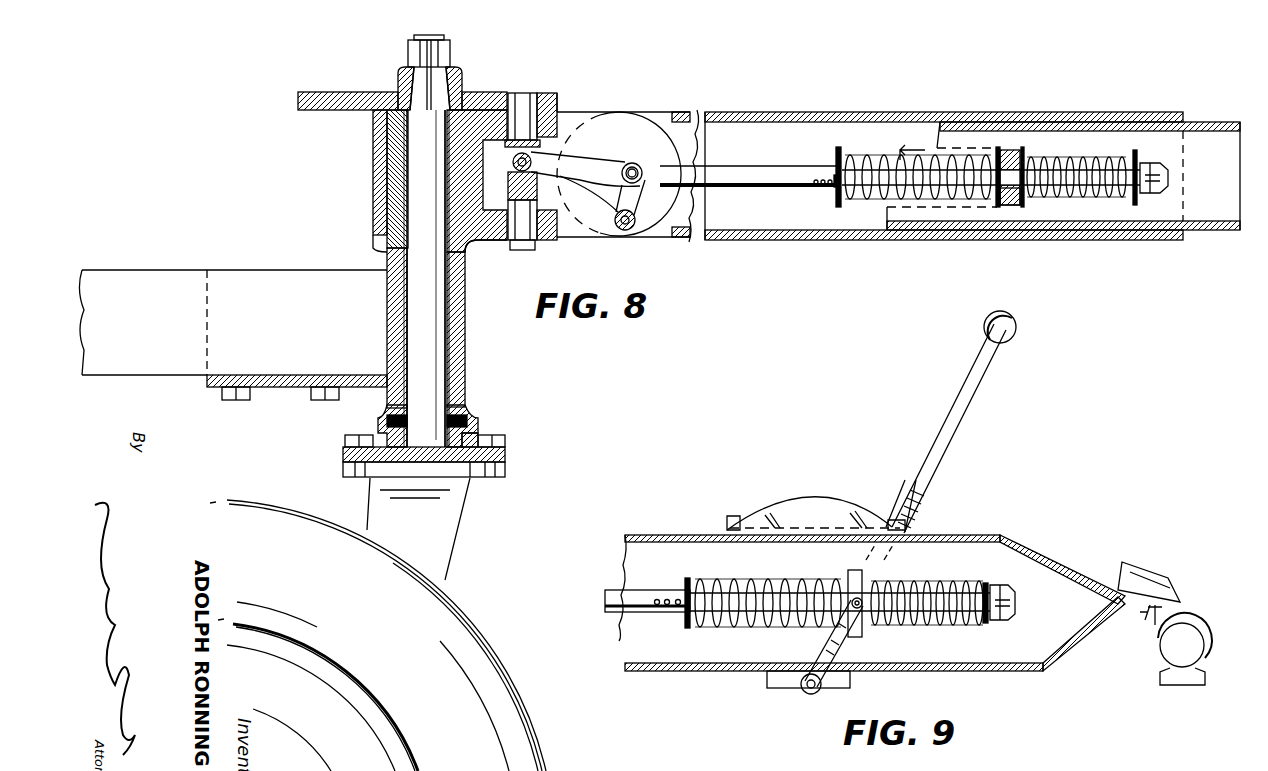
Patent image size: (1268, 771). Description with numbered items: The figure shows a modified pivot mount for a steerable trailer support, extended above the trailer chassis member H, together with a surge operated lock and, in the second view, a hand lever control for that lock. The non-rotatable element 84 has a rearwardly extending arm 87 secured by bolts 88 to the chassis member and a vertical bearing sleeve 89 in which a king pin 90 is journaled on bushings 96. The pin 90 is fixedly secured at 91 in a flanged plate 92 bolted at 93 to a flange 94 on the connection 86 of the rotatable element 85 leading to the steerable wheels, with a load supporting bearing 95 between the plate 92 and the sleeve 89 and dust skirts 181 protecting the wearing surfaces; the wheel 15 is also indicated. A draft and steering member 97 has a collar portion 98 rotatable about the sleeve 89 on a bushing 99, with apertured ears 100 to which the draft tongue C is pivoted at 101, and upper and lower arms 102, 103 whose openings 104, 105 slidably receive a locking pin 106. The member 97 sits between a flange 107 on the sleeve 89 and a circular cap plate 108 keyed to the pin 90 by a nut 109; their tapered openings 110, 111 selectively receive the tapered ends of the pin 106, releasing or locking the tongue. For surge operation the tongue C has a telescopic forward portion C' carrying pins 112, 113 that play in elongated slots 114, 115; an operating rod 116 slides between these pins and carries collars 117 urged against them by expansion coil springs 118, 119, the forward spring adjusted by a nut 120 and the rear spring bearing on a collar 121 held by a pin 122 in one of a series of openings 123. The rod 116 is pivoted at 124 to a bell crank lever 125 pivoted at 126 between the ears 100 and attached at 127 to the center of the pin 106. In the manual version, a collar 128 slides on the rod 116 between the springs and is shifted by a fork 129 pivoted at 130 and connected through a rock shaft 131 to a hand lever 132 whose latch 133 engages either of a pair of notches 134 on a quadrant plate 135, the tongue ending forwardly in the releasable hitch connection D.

In FIG. 8, the wheel 15 is at (528, 714).
In FIG. 8, the non-rotatable element 84 is at (468, 380).
In FIG. 8, the rotatable element 85 is at (510, 457).
In FIG. 8, the connection 86 is at (455, 546).
In FIG. 8, the rearwardly extending arm 87 is at (207, 384).
In FIG. 8, the bolts 88 is at (312, 398).
In FIG. 8, the bearing sleeve 89 is at (466, 308).
In FIG. 8, the king pin 90 is at (430, 360).
In FIG. 8, the fixed securement 91 is at (470, 436).
In FIG. 8, the flanged plate 92 is at (345, 452).
In FIG. 8, the bolts 93 is at (506, 438).
In FIG. 8, the flange 94 is at (492, 478).
In FIG. 8, the load supporting bearing 95 is at (462, 418).
In FIG. 8, the bushings 96 is at (405, 180).
In FIG. 8, the draft and steering member 97 is at (371, 214).
In FIG. 8, the collar portion 98 is at (373, 141).
In FIG. 8, the bushing 99 is at (387, 163).
In FIG. 8, the apertured ears 100 is at (598, 118).
In FIG. 8, the tongue pivot 101 is at (633, 160).
In FIG. 8, the upper arm 102 is at (558, 112).
In FIG. 8, the lower arm 103 is at (557, 240).
In FIG. 8, the opening 104 is at (603, 108).
In FIG. 8, the opening 105 is at (560, 204).
In FIG. 8, the locking pin 106 is at (522, 93).
In FIG. 8, the flange 107 is at (478, 252).
In FIG. 8, the circular cap plate 108 is at (343, 93).
In FIG. 8, the nut 109 is at (452, 58).
In FIG. 8, the tapered opening 110 is at (526, 250).
In FIG. 8, the tapered opening 111 is at (550, 93).
In FIG. 8, the pin 112 is at (1010, 150).
In FIG. 8, the pin 113 is at (1010, 208).
In FIG. 8, the elongated slot 114 is at (902, 150).
In FIG. 8, the elongated slot 115 is at (887, 212).
In FIG. 8, the operating rod 116 is at (752, 168).
In FIG. 9, the operating rod 116 is at (612, 600).
In FIG. 8, the collars 117 is at (998, 150).
In FIG. 8, the forward expansion coil spring 118 is at (1068, 166).
In FIG. 9, the forward expansion coil spring 118 is at (918, 584).
In FIG. 8, the rear expansion coil spring 119 is at (870, 160).
In FIG. 9, the rear expansion coil spring 119 is at (738, 580).
In FIG. 8, the nut 120 is at (1150, 163).
In FIG. 9, the nut 120 is at (1000, 585).
In FIG. 8, the collar 121 is at (836, 200).
In FIG. 9, the collar 121 is at (688, 578).
In FIG. 8, the pin 122 is at (836, 170).
In FIG. 8, the openings 123 is at (818, 188).
In FIG. 8, the pivot 124 is at (642, 168).
In FIG. 8, the bell crank lever 125 is at (597, 166).
In FIG. 8, the pivot 126 is at (626, 231).
In FIG. 8, the pivotal attachment 127 is at (513, 163).
In FIG. 9, the collar 128 is at (852, 572).
In FIG. 9, the fork 129 is at (842, 642).
In FIG. 9, the pivot 130 is at (828, 626).
In FIG. 9, the rock shaft 131 is at (805, 695).
In FIG. 9, the hand lever 132 is at (945, 436).
In FIG. 9, the latch 133 is at (915, 520).
In FIG. 9, the notches 134 is at (733, 516).
In FIG. 9, the quadrant plate 135 is at (815, 500).
In FIG. 8, the dust skirts 181 is at (378, 428).
In FIG. 8, the trailer chassis member H is at (137, 270).
In FIG. 8, the draft tongue C is at (944, 161).
In FIG. 9, the draft tongue C is at (872, 588).
In FIG. 8, the telescopic forward portion C' is at (1063, 198).
In FIG. 9, the releasable hitch connection D is at (1195, 622).